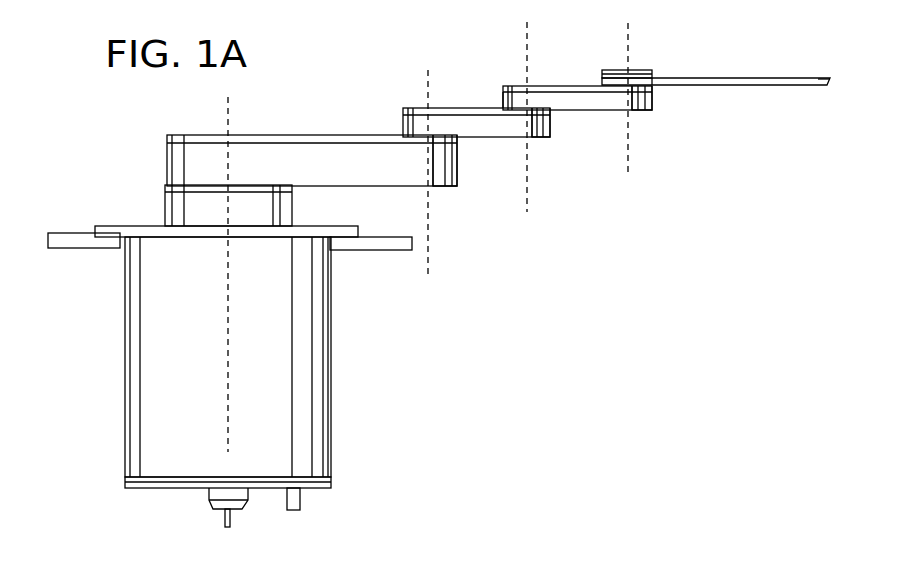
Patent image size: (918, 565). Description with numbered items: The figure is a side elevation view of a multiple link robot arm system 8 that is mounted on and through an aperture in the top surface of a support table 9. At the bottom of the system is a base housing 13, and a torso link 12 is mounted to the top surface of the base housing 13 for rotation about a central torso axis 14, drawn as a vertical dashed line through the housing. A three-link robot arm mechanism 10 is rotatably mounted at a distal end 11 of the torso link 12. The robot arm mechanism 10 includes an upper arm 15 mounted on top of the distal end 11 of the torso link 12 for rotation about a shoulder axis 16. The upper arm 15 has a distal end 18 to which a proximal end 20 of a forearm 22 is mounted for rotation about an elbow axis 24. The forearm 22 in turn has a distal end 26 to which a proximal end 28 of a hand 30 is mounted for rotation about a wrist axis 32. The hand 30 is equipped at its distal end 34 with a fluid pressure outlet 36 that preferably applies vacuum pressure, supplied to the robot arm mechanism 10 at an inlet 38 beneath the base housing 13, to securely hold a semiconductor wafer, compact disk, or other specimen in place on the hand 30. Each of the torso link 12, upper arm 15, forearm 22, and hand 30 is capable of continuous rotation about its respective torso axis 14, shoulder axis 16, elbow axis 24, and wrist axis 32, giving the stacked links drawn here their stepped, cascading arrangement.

The multiple link robot arm system 8 is at (112, 377).
The support table 9 is at (78, 250).
The three-link robot arm mechanism 10 is at (593, 190).
The distal end 11 is at (457, 165).
The torso link 12 is at (345, 157).
The base housing 13 is at (315, 338).
The torso axis 14 is at (227, 112).
The upper arm 15 is at (472, 122).
The shoulder axis 16 is at (430, 245).
The distal end 18 is at (552, 123).
The proximal end 20 is at (503, 98).
The forearm 22 is at (568, 87).
The elbow axis 24 is at (527, 212).
The distal end 26 is at (652, 102).
The proximal end 28 is at (613, 75).
The hand 30 is at (728, 77).
The wrist axis 32 is at (630, 153).
The distal end 34 is at (832, 82).
The fluid pressure outlet 36 is at (817, 73).
The inlet 38 is at (295, 510).